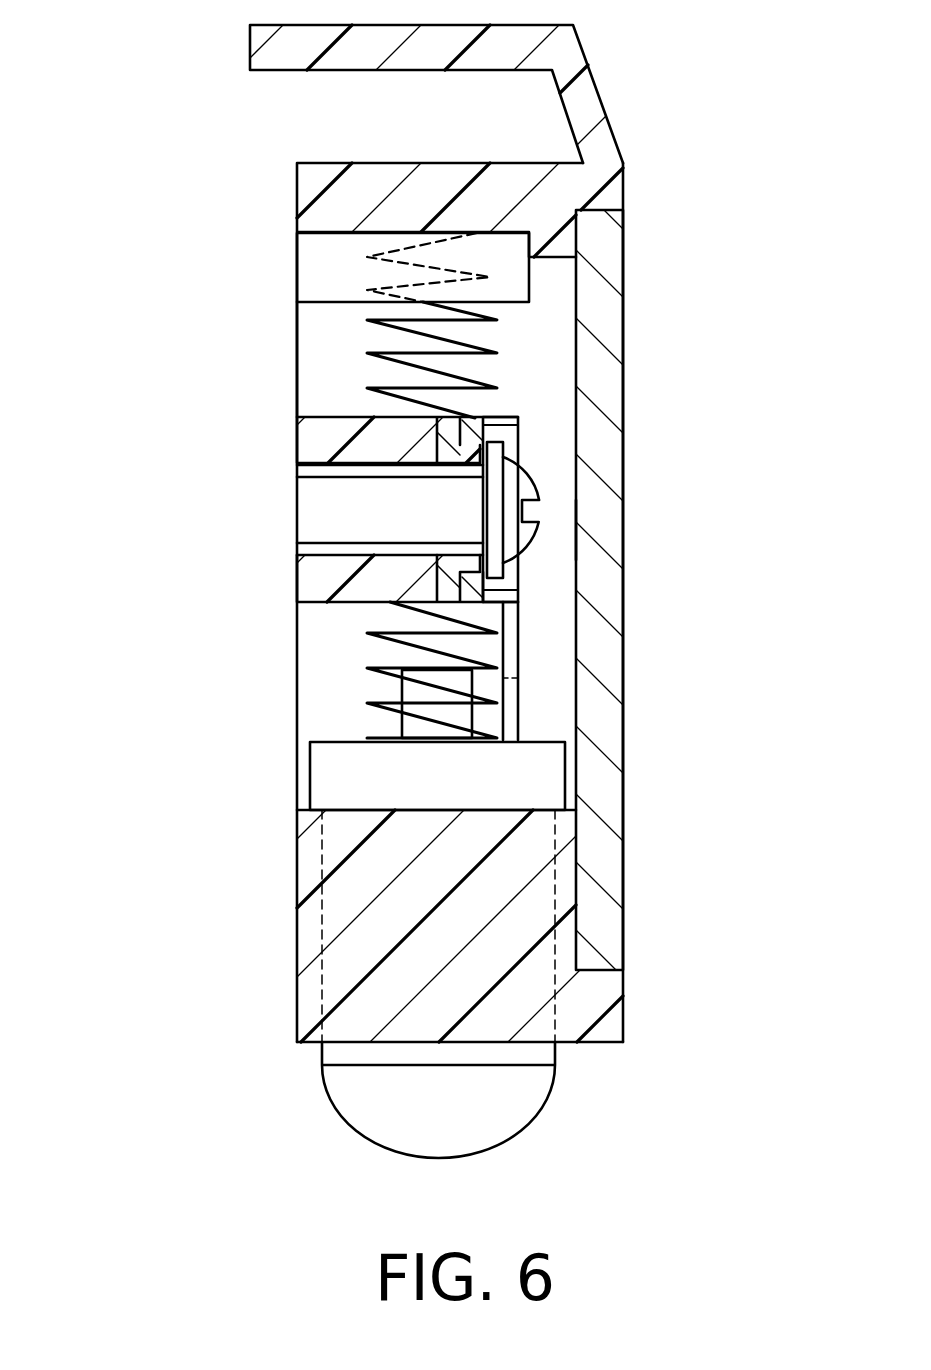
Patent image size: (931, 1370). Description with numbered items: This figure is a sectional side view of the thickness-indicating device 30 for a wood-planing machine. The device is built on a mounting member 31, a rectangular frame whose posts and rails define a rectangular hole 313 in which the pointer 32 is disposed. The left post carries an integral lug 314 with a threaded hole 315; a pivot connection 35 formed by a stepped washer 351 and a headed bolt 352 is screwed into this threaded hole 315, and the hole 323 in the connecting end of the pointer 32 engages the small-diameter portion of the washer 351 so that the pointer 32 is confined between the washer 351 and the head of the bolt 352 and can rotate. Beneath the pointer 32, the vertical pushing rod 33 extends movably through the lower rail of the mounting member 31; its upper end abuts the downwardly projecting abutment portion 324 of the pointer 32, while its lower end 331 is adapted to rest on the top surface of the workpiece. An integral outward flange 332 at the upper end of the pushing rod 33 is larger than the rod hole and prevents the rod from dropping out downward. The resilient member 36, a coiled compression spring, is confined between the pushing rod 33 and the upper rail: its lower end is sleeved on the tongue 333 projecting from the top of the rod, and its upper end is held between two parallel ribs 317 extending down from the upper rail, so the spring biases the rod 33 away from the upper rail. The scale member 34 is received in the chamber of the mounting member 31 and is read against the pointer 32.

The thickness-indicating device 30 is at (650, 173).
The mounting member 31 is at (585, 107).
The pointer 32 is at (470, 428).
The vertical pushing rod 33 is at (322, 923).
The scale member 34 is at (612, 530).
The screw head 35 is at (520, 487).
The resilient member 36 is at (308, 378).
The rectangular hole 313 is at (308, 322).
The integral lug 314 is at (308, 448).
The threaded hole 315 is at (333, 553).
The parallel ribs 317 is at (308, 268).
The hole 323 is at (470, 575).
The abutment portion 324 is at (513, 705).
The lower end 331 is at (350, 1083).
The outward flange 332 is at (347, 780).
The tongue 333 is at (408, 723).
The stepped washer 351 is at (437, 463).
The headed bolt 352 is at (317, 523).